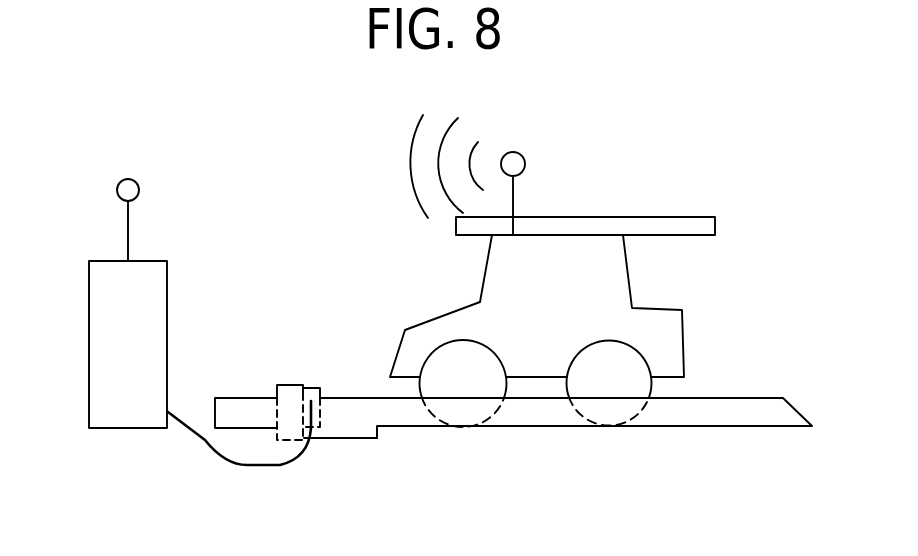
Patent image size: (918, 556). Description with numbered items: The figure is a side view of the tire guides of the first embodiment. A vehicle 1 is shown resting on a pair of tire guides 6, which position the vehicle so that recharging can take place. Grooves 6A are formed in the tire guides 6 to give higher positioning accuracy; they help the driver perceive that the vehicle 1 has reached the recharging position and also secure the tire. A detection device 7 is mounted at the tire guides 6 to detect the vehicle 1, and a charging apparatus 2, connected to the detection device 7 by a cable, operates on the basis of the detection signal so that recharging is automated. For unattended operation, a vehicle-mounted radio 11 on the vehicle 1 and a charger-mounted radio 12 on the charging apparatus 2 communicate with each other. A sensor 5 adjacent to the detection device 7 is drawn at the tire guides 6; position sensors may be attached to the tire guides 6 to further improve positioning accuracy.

The vehicle 1 is at (607, 228).
The charging apparatus 2 is at (100, 260).
The sensor 5 is at (290, 385).
The tire guides 6 is at (745, 422).
The grooves 6A is at (352, 427).
The detection device 7 is at (314, 426).
The vehicle-mounted radio 11 is at (522, 155).
The charger-mounted radio 12 is at (135, 180).